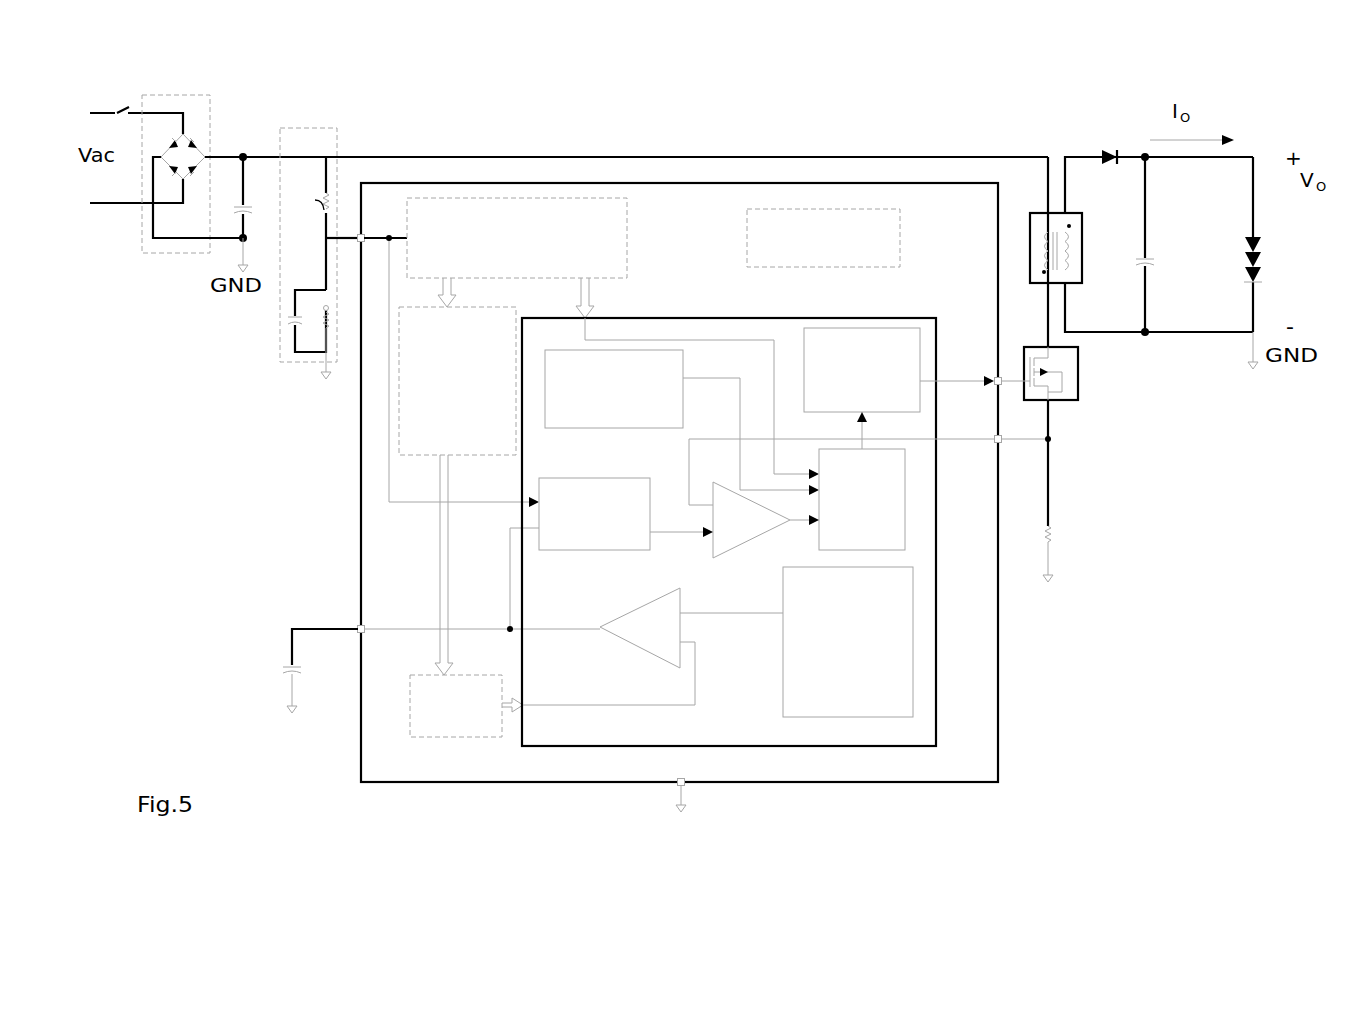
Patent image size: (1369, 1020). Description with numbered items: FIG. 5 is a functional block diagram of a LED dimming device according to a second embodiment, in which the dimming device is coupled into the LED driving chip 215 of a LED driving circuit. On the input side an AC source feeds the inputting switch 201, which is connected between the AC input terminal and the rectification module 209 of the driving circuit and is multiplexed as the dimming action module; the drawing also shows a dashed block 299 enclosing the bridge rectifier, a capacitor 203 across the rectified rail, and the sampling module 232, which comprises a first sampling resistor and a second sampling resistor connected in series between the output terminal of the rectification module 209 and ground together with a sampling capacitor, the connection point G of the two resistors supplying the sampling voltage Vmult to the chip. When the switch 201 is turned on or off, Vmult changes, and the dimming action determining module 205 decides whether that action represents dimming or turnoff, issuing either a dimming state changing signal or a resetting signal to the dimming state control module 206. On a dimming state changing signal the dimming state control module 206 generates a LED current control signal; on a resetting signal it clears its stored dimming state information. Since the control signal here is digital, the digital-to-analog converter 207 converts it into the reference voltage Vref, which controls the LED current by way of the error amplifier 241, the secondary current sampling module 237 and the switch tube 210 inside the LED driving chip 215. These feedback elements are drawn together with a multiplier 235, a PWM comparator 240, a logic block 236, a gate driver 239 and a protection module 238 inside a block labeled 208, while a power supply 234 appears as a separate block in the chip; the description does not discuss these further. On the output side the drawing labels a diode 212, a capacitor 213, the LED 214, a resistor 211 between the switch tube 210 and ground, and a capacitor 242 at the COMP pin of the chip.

The inputting switch 201 is at (127, 111).
The rectifier bridge 299 is at (189, 96).
The input capacitor 203 is at (247, 206).
The sampling module 232 is at (323, 128).
The dimming action determining module 205 is at (517, 258).
The dimming state control module 206 is at (457, 491).
The digital-to-analog converter 207 is at (466, 706).
The control circuit 208 is at (758, 534).
The rectification module 209 is at (1035, 207).
The switch tube 210 is at (1078, 372).
The current sampling resistor 211 is at (1050, 530).
The output diode 212 is at (1102, 153).
The output capacitor 213 is at (1150, 258).
The LED load 214 is at (1264, 257).
The LED driving chip 215 is at (660, 500).
The power supply 234 is at (823, 238).
The multiplier 235 is at (626, 514).
The logic circuit 236 is at (862, 481).
The secondary current sampling module 237 is at (848, 642).
The protection module 238 is at (682, 422).
The gate driver 239 is at (899, 370).
The PWM comparator 240 is at (766, 520).
The error amplifier 241 is at (640, 628).
The compensation capacitor 242 is at (300, 660).